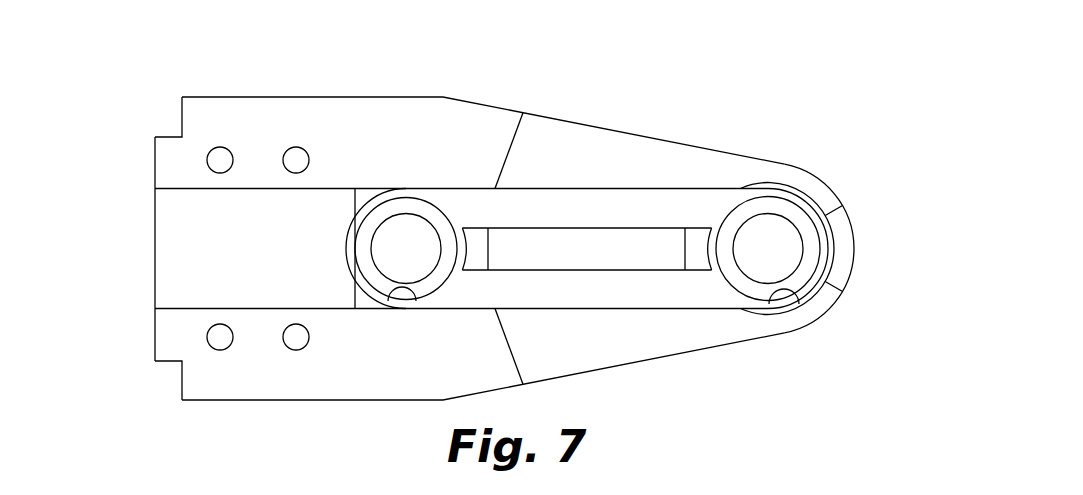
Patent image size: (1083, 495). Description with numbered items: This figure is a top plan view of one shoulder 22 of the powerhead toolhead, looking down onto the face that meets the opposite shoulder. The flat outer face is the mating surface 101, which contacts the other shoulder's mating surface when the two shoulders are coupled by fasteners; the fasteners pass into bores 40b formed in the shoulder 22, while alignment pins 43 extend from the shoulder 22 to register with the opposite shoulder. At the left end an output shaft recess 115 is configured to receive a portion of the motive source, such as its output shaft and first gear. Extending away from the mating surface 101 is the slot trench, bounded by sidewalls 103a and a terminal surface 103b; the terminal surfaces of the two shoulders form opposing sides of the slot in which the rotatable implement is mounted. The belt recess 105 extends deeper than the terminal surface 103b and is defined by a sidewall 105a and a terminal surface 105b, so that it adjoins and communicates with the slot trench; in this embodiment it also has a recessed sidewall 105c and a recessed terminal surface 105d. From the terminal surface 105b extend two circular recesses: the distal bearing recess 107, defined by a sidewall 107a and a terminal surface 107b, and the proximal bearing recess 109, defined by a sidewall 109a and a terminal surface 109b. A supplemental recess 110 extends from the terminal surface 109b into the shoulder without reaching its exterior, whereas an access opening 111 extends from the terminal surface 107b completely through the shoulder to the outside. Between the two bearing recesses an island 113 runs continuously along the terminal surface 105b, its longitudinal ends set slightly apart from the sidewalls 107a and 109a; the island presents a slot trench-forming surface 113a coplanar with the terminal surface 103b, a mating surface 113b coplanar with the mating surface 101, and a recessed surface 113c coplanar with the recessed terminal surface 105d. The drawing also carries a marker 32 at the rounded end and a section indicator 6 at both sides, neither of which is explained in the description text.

The shoulder 22 is at (313, 97).
The mating surface 101 is at (263, 400).
The rounded end of connector body 32 is at (853, 230).
The alignment pins 43 is at (220, 170).
The bores 40b is at (296, 327).
The output shaft recess 115 is at (196, 280).
The belt recess 105 is at (661, 205).
The sidewall 105a is at (577, 189).
The terminal surface 105b is at (612, 207).
The recessed sidewall 105c is at (817, 198).
The recessed terminal surface 105d is at (795, 192).
The sidewalls 103a is at (515, 138).
The terminal surface 103b is at (640, 338).
The proximal bearing recess 109 is at (450, 202).
The sidewall 109a is at (411, 306).
The terminal surface 109b is at (410, 206).
The supplemental recess 110 is at (393, 246).
The distal bearing recess 107 is at (717, 204).
The sidewall 107a is at (797, 305).
The terminal surface 107b is at (768, 205).
The access opening 111 is at (785, 254).
The island 113 is at (679, 278).
The slot trench-forming surface 113a is at (584, 258).
The mating surface 113b is at (491, 249).
The recessed surface 113c is at (688, 249).
The section line 6- 6 is at (100, 202).